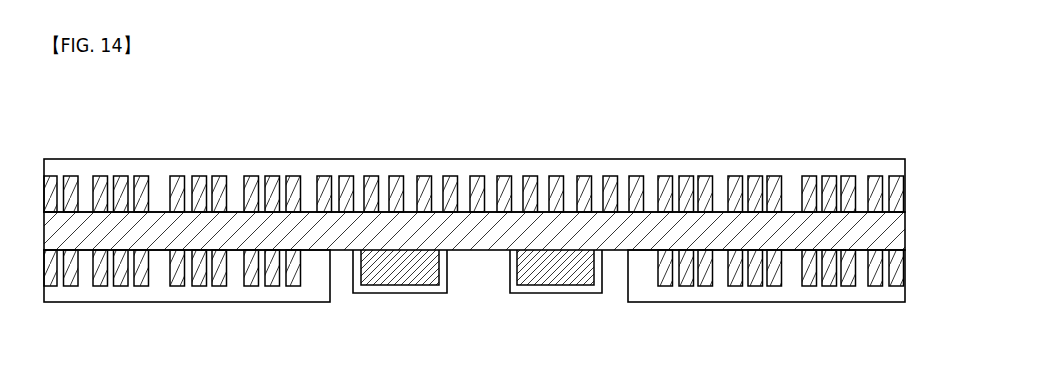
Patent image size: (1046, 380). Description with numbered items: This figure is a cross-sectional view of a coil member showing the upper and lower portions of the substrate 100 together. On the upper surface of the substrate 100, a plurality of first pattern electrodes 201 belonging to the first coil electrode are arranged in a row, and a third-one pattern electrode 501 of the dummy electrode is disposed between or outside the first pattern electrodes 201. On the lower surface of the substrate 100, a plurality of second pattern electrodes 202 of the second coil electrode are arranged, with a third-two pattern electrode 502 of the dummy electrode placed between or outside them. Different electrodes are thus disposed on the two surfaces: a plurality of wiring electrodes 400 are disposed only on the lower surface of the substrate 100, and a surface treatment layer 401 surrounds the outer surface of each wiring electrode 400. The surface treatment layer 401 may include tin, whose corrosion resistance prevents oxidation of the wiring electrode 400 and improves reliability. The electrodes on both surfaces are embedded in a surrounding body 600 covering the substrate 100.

The substrate 100 is at (905, 229).
The first pattern electrode 201 is at (737, 176).
The second pattern electrode 202 is at (773, 285).
The wiring electrode 400 is at (558, 283).
The surface treatment layer 401 is at (512, 292).
The 3-1 pattern electrode 501 is at (505, 178).
The 3-2 pattern electrode 502 is at (143, 284).
The molding member 600 is at (792, 170).